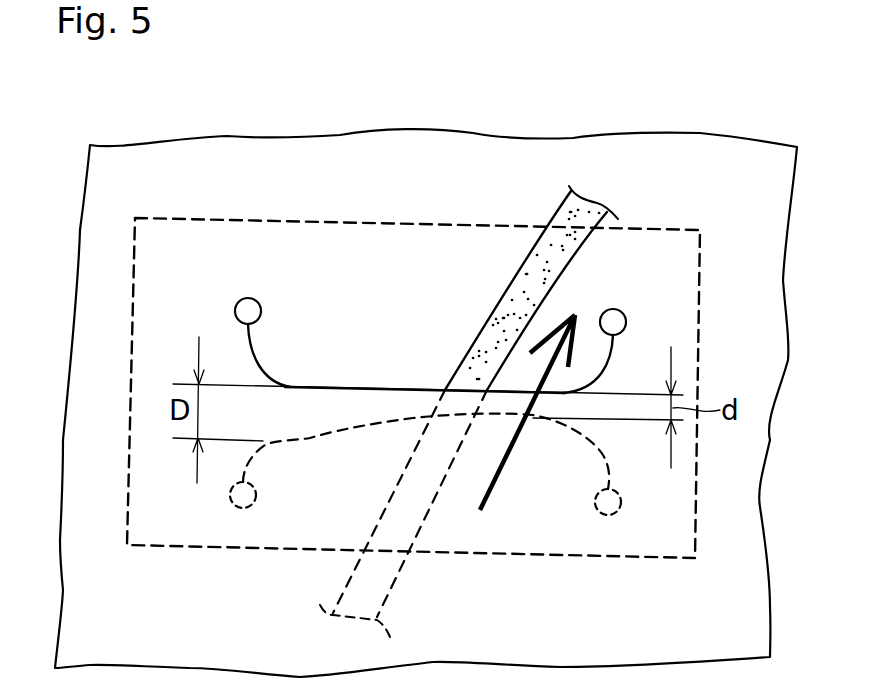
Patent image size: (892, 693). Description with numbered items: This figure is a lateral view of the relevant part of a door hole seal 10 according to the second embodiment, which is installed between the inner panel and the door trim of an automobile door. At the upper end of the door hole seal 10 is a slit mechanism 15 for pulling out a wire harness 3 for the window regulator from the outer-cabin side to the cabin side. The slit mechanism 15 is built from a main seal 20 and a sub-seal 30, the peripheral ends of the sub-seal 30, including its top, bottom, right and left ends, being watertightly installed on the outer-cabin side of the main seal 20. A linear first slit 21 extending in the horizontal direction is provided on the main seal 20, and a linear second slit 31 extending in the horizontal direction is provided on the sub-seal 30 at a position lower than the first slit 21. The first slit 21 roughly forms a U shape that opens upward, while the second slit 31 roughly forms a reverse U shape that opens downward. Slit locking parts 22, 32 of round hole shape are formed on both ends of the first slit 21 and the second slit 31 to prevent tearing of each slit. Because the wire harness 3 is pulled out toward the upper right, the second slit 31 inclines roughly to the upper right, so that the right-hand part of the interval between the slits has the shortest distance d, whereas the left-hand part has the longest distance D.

The wire harness 3 is at (487, 317).
The door hole seal 10 is at (545, 124).
The slit mechanism 15 is at (682, 203).
The main seal 20 is at (341, 168).
The first slit 21 is at (360, 387).
The slit locking part 22 is at (248, 308).
The sub-seal 30 is at (392, 252).
The second slit 31 is at (352, 430).
The slit locking part 32 is at (233, 495).